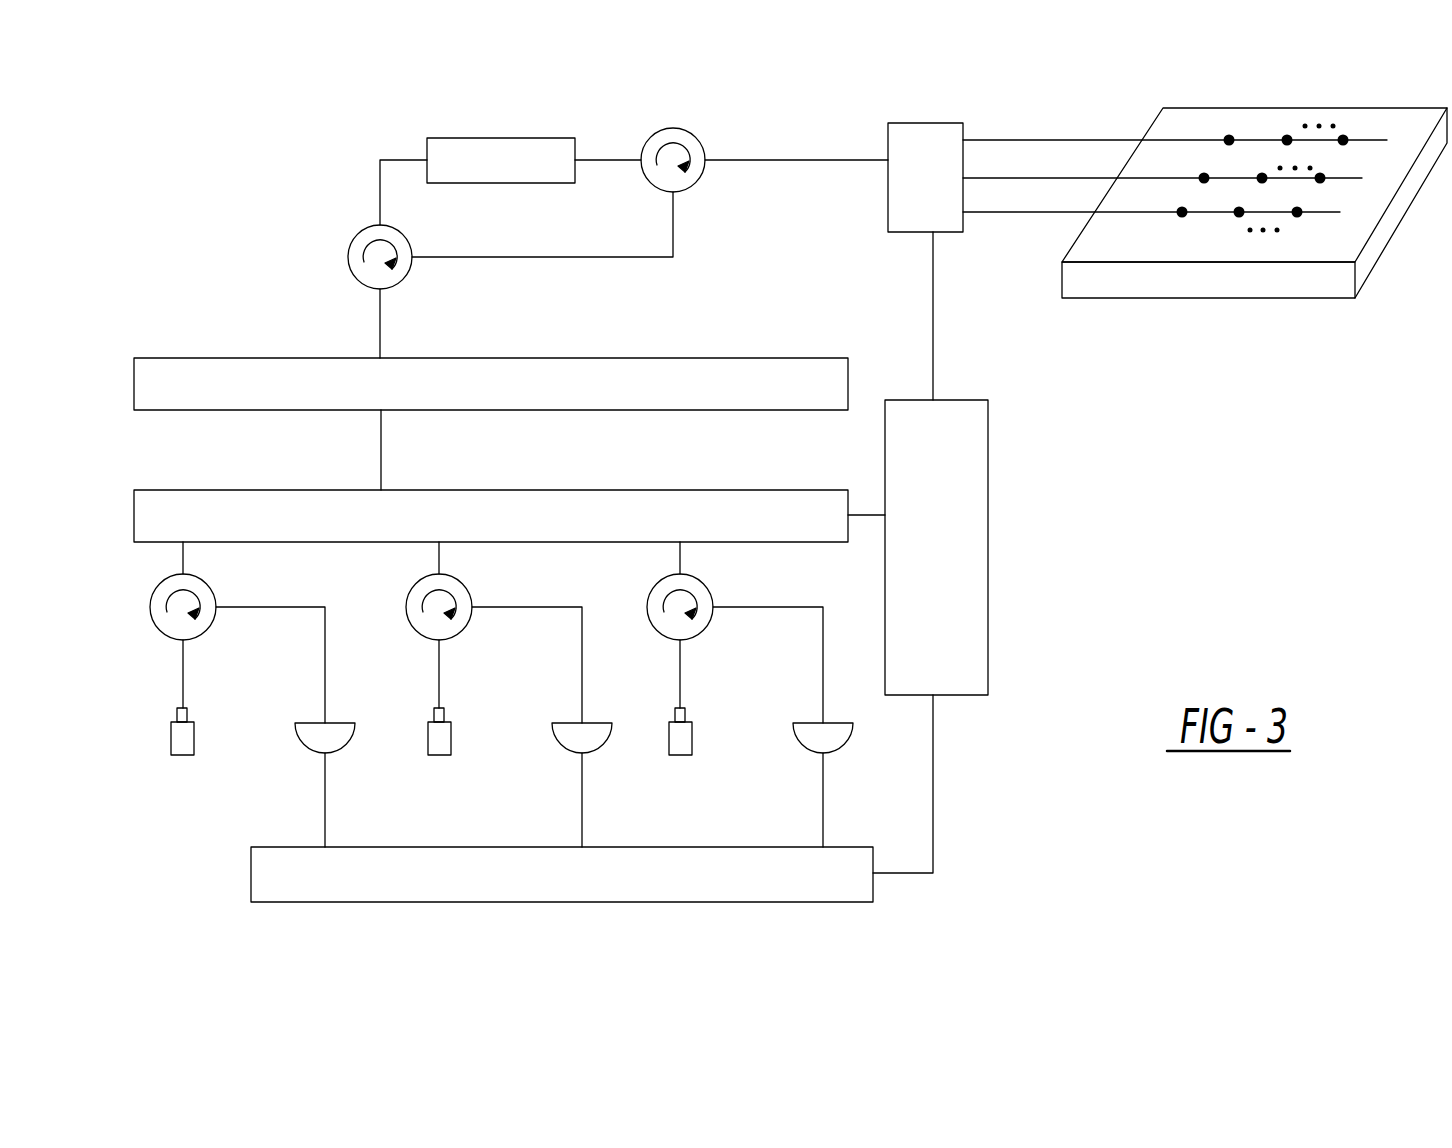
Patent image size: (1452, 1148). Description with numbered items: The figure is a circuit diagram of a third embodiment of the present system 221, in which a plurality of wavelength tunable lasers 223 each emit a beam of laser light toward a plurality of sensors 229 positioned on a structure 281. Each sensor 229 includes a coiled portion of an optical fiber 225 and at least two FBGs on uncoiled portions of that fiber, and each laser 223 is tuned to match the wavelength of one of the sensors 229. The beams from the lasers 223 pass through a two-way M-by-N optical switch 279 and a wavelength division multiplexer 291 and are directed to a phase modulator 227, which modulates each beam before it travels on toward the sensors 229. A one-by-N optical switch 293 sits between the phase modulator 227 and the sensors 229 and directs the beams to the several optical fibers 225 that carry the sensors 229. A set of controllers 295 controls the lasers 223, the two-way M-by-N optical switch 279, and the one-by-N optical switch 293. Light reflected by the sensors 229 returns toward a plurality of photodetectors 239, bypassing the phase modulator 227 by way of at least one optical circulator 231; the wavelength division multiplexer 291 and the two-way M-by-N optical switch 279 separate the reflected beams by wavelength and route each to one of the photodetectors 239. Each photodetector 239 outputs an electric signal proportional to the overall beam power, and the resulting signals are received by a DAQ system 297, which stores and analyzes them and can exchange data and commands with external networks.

The system 221 is at (304, 168).
The wavelength tunable laser 223 is at (194, 738).
The optical fiber 225 is at (614, 160).
The phase modulator 227 is at (515, 183).
The sensor 229 is at (1287, 140).
The optical circulator 231 is at (350, 258).
The photodetector 239 is at (305, 723).
The two-way M×N optical switch 279 is at (597, 490).
The structure 281 is at (1120, 242).
The wavelength division multiplexer 291 is at (595, 358).
The 1×N optical switch 293 is at (888, 197).
The controller 295 is at (988, 612).
The DAQ system 297 is at (525, 903).